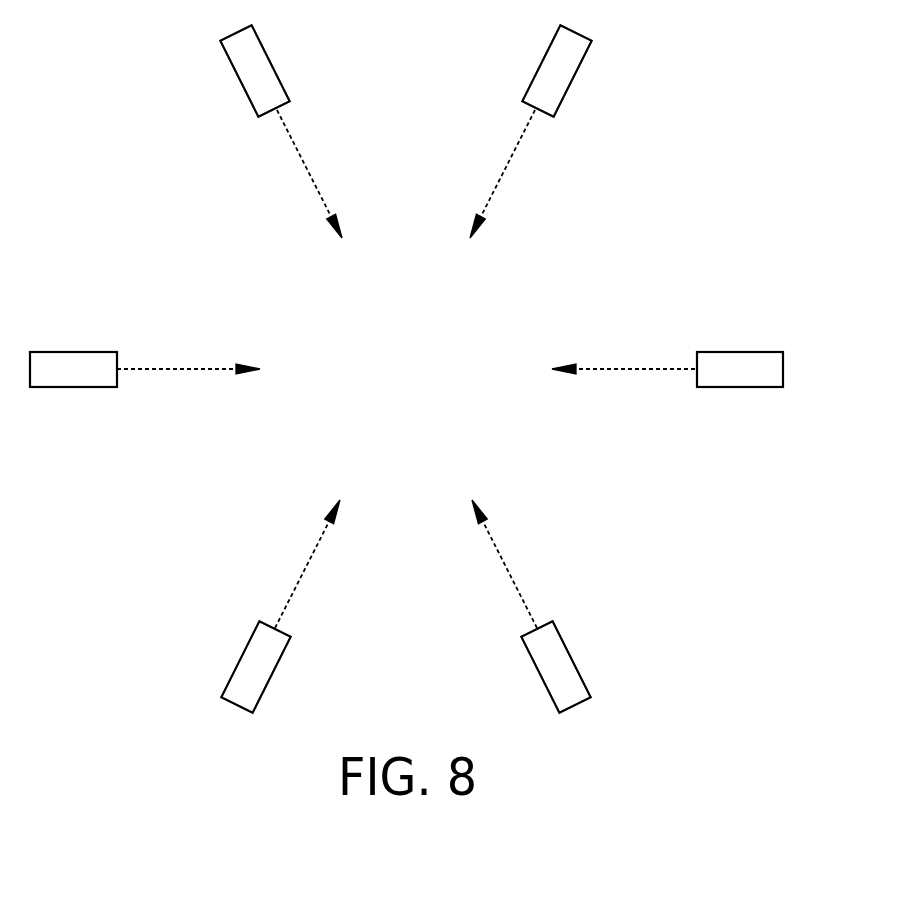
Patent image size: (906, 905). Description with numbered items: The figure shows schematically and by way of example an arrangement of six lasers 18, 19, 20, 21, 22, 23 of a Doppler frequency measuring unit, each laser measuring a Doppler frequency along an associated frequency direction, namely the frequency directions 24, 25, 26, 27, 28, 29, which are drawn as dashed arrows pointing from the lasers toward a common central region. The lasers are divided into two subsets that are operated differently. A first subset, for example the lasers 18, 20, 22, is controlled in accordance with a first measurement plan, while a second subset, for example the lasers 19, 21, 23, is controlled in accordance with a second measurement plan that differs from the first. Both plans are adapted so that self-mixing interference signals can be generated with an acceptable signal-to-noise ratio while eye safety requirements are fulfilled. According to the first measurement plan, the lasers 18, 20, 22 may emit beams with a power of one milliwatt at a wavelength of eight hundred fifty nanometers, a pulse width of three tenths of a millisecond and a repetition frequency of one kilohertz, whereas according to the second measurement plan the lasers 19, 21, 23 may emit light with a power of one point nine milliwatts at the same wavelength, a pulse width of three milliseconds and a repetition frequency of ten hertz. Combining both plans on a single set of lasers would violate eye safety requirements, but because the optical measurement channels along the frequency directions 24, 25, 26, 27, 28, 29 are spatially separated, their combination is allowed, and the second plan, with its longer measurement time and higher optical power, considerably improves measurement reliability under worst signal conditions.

The laser 18 is at (78, 352).
The laser 19 is at (237, 70).
The laser 20 is at (572, 80).
The laser 21 is at (742, 352).
The laser 22 is at (525, 638).
The laser 23 is at (245, 650).
The frequency direction 24 is at (190, 368).
The frequency direction 25 is at (315, 190).
The frequency direction 26 is at (498, 187).
The frequency direction 27 is at (613, 368).
The frequency direction 28 is at (498, 552).
The frequency direction 29 is at (312, 553).